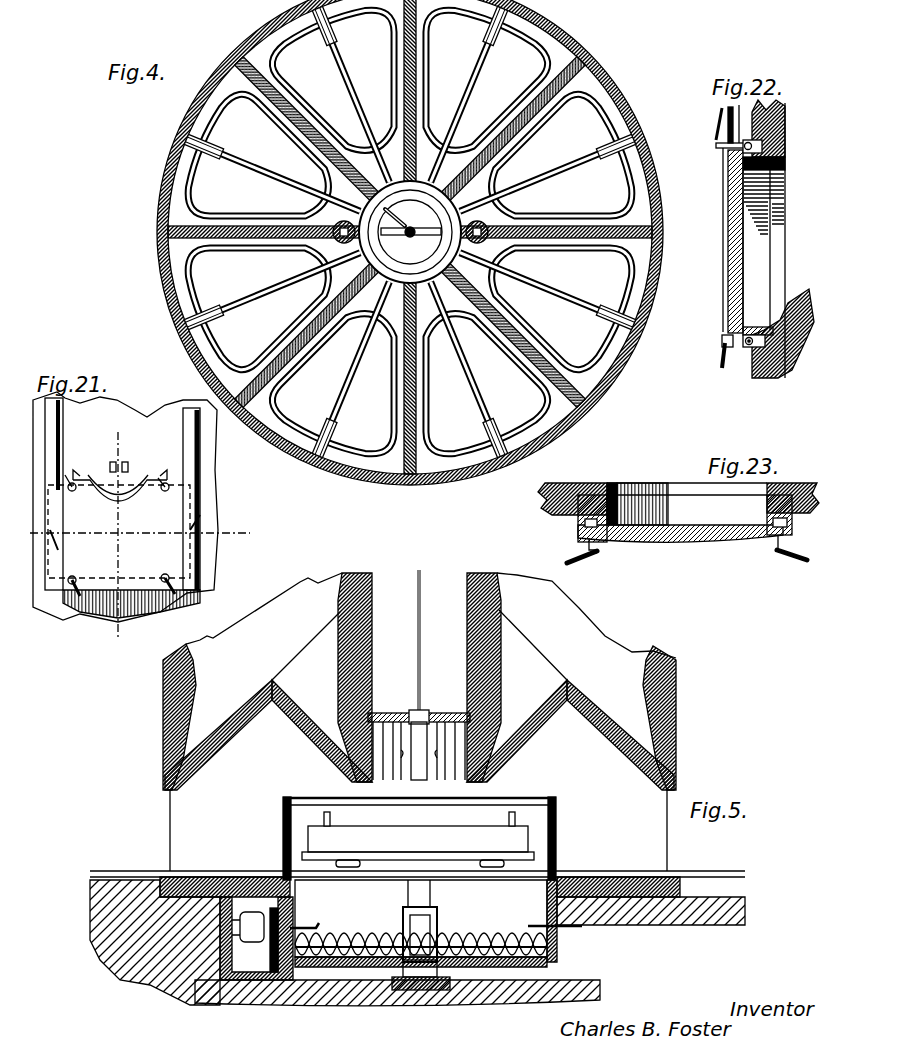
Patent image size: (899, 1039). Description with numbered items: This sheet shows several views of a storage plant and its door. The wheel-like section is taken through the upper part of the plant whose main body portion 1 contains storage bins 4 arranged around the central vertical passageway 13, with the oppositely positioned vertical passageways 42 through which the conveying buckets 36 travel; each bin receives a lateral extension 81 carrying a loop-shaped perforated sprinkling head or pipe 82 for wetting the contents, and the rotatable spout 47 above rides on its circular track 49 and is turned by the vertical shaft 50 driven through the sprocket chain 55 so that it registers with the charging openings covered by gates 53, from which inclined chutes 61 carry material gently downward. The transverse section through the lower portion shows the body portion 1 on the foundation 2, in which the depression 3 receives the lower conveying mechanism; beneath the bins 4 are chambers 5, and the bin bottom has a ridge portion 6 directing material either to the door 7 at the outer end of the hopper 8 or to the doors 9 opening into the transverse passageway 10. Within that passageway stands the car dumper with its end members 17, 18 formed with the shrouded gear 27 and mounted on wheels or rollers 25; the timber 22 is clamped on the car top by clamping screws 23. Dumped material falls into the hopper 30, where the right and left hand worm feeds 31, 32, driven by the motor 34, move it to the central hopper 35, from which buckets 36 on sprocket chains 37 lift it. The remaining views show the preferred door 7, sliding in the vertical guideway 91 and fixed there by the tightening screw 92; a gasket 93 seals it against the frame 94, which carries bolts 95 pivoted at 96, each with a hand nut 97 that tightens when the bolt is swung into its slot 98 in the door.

In FIG. 4, the main body portion 1 is at (558, 28).
In FIG. 22, the main body portion 1 is at (775, 133).
In FIG. 23, the main body portion 1 is at (575, 490).
In FIG. 21, the main body portion 1 is at (212, 482).
In FIG. 5, the main body portion 1 is at (163, 680).
In FIG. 5, the foundation 2 is at (178, 900).
In FIG. 5, the depression 3 is at (555, 962).
In FIG. 4, the storage bin 4 is at (410, 237).
In FIG. 5, the storage bin 4 is at (431, 615).
In FIG. 5, the chamber 5 is at (414, 677).
In FIG. 5, the ridge portion 6 is at (280, 673).
In FIG. 22, the door 7 is at (730, 270).
In FIG. 23, the door 7 is at (716, 540).
In FIG. 21, the door 7 is at (140, 536).
In FIG. 22, the hopper 8 is at (790, 298).
In FIG. 5, the hopper 8 is at (232, 716).
In FIG. 5, the door 9 is at (439, 760).
In FIG. 5, the passageway 10 is at (667, 795).
In FIG. 4, the passageway 13 is at (418, 226).
In FIG. 5, the end member 17 is at (283, 825).
In FIG. 5, the end member 18 is at (558, 822).
In FIG. 21, the timber 22 is at (117, 541).
In FIG. 5, the timber 22 is at (333, 830).
In FIG. 21, the clamping screw 23 is at (174, 505).
In FIG. 5, the clamping screw 23 is at (333, 818).
In FIG. 5, the wheels or rollers 25 is at (296, 886).
In FIG. 5, the shrouded gear 27 is at (283, 797).
In FIG. 5, the hopper 30 is at (421, 930).
In FIG. 5, the right hand worm feed 31 is at (348, 940).
In FIG. 5, the left hand worm feed 32 is at (528, 928).
In FIG. 5, the motor 34 is at (248, 938).
In FIG. 5, the central hopper 35 is at (462, 1015).
In FIG. 4, the conveying bucket 36 is at (338, 238).
In FIG. 5, the conveying bucket 36 is at (412, 945).
In FIG. 5, the sprocket chain 37 is at (408, 897).
In FIG. 4, the vertical passageway 42 is at (337, 226).
In FIG. 4, the rotatable spout 47 is at (405, 212).
In FIG. 4, the circular track 49 is at (410, 232).
In FIG. 5, the vertical shaft 50 is at (419, 642).
In FIG. 4, the gate 53 is at (442, 250).
In FIG. 5, the sprocket chain 55 is at (427, 714).
In FIG. 4, the inclined chute 61 is at (338, 70).
In FIG. 4, the extension 81 is at (440, 160).
In FIG. 4, the sprinkling head or pipe 82 is at (392, 37).
In FIG. 23, the vertical guideway 91 is at (585, 532).
In FIG. 5, the vertical guideway 91 is at (318, 928).
In FIG. 23, the tightening screw 92 is at (568, 561).
In FIG. 21, the tightening screw 92 is at (87, 590).
In FIG. 23, the gasket 93 is at (772, 525).
In FIG. 23, the frame 94 is at (614, 498).
In FIG. 21, the frame 94 is at (190, 458).
In FIG. 22, the bolt 95 is at (722, 338).
In FIG. 22, the pivot 96 is at (748, 348).
In FIG. 22, the hand nut 97 is at (722, 352).
In FIG. 21, the slot 98 is at (170, 478).